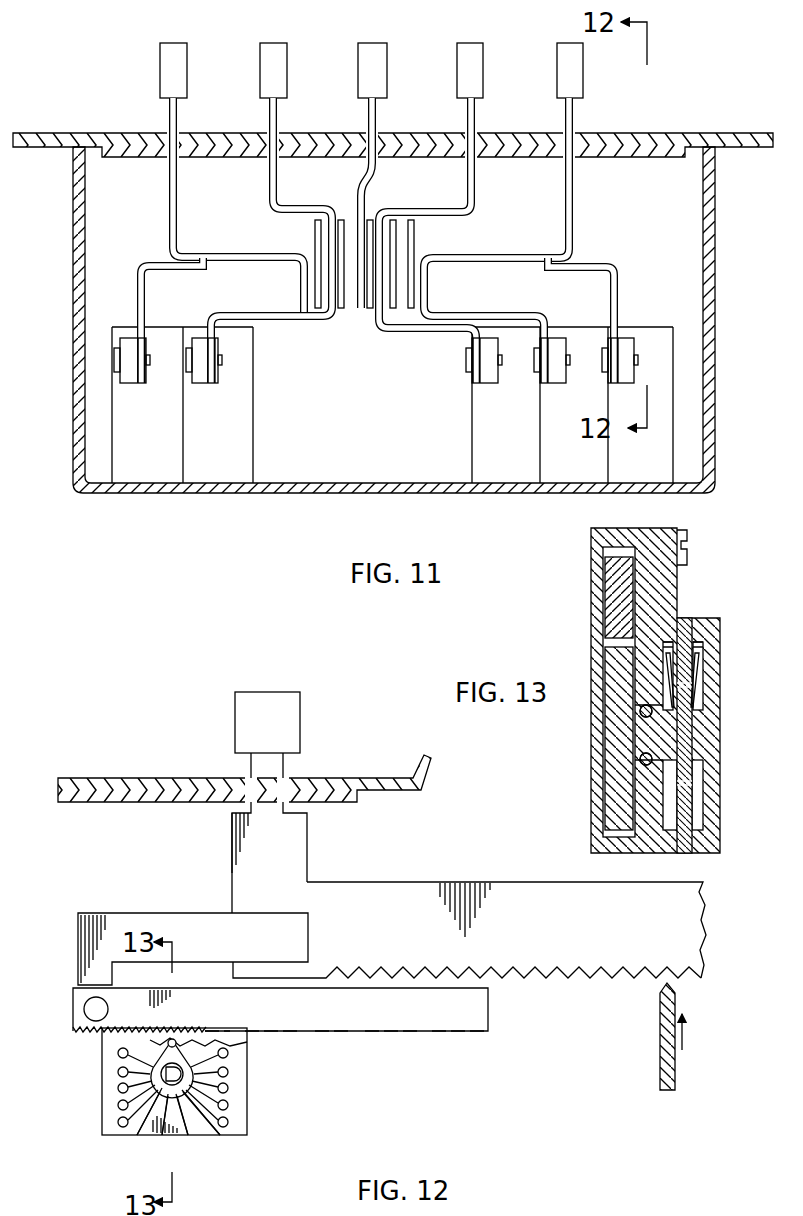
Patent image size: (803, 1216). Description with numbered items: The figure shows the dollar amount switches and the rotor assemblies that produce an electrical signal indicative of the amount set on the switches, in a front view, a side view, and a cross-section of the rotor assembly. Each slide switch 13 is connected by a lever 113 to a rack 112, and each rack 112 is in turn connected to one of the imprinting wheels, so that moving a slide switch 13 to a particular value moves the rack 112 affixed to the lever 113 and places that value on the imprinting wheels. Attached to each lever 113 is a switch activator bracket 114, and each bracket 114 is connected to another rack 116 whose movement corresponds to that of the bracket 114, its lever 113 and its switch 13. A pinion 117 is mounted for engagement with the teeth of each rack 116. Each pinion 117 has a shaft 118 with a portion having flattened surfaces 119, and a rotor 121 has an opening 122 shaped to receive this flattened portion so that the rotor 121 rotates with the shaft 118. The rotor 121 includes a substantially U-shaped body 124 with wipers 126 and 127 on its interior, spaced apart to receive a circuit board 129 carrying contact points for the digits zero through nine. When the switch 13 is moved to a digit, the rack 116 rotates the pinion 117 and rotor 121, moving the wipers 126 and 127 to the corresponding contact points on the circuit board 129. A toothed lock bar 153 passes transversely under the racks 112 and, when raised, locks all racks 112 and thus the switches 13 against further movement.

In FIG. 11, the slide switch 13 is at (260, 57).
In FIG. 12, the slide switch 13 is at (240, 714).
In FIG. 11, the rack 112 is at (340, 237).
In FIG. 12, the rack 112 is at (373, 890).
In FIG. 11, the lever 113 is at (269, 177).
In FIG. 12, the lever 113 is at (298, 843).
In FIG. 11, the switch activator bracket 114 is at (142, 295).
In FIG. 12, the switch activator bracket 114 is at (122, 920).
In FIG. 11, the rack 116 is at (127, 374).
In FIG. 13, the rack 116 is at (620, 583).
In FIG. 12, the rack 116 is at (83, 1032).
In FIG. 13, the pinion 117 is at (609, 723).
In FIG. 12, the pinion 117 is at (206, 1028).
In FIG. 12, the shaft 118 is at (194, 1129).
In FIG. 12, the flattened surfaces 119 is at (137, 1127).
In FIG. 13, the rotor 121 is at (698, 683).
In FIG. 12, the rotor 121 is at (163, 1129).
In FIG. 12, the opening 122 is at (213, 1127).
In FIG. 13, the U-shaped body 124 is at (668, 677).
In FIG. 13, the wiper 126 is at (672, 657).
In FIG. 13, the wiper 127 is at (702, 647).
In FIG. 13, the circuit board 129 is at (683, 637).
In FIG. 12, the circuit board 129 is at (102, 1095).
In FIG. 12, the lock bar 153 is at (660, 1067).